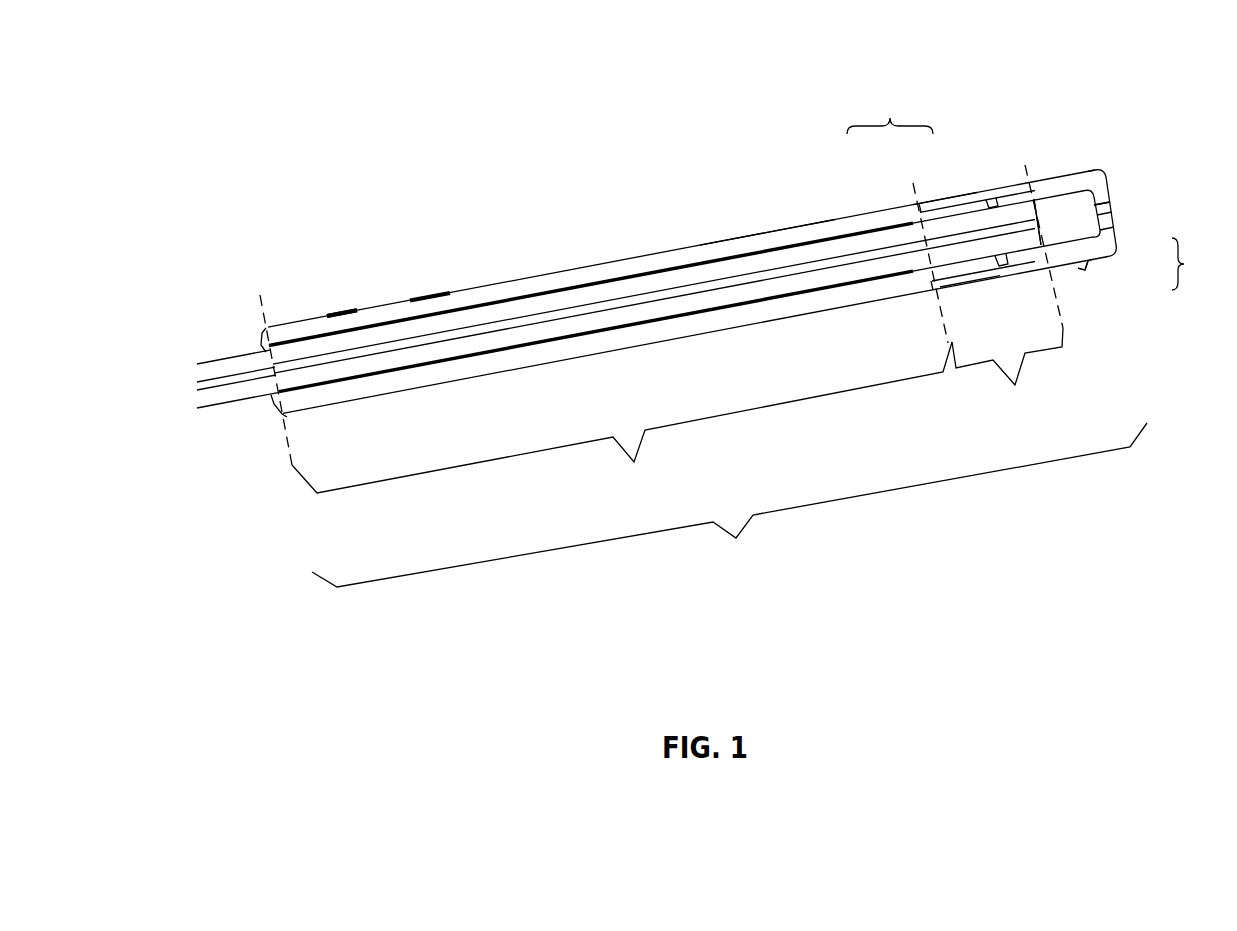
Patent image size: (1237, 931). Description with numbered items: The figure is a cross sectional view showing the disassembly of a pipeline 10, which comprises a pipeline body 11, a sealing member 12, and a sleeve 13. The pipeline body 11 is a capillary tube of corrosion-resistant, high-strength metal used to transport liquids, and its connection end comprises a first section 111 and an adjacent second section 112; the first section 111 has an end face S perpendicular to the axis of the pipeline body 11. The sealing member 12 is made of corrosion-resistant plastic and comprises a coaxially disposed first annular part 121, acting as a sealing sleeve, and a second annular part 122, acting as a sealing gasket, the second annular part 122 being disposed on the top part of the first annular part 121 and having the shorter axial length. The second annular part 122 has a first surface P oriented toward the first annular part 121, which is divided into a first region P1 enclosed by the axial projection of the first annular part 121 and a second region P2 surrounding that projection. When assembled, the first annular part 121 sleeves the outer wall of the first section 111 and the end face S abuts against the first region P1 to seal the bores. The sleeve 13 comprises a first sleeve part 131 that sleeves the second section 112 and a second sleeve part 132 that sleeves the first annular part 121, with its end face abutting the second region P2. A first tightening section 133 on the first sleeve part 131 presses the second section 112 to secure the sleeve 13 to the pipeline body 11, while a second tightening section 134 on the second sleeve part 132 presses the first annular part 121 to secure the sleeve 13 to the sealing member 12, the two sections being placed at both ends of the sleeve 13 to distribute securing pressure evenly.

The pipeline 10 is at (703, 379).
The pipeline body 11 is at (230, 370).
The first section 111 is at (988, 294).
The second section 112 is at (622, 423).
The sealing member 12 is at (1135, 111).
The first annular part 121 is at (1048, 198).
The second annular part 122 is at (1092, 182).
The sleeve 13 is at (890, 108).
The first sleeve part 131 is at (835, 218).
The second sleeve part 132 is at (977, 190).
The first tightening section 133 is at (337, 313).
The second tightening section 134 is at (970, 283).
The end face S is at (1043, 235).
The first region P1 is at (1093, 237).
The second region P2 is at (1085, 260).
The first surface P is at (1190, 264).